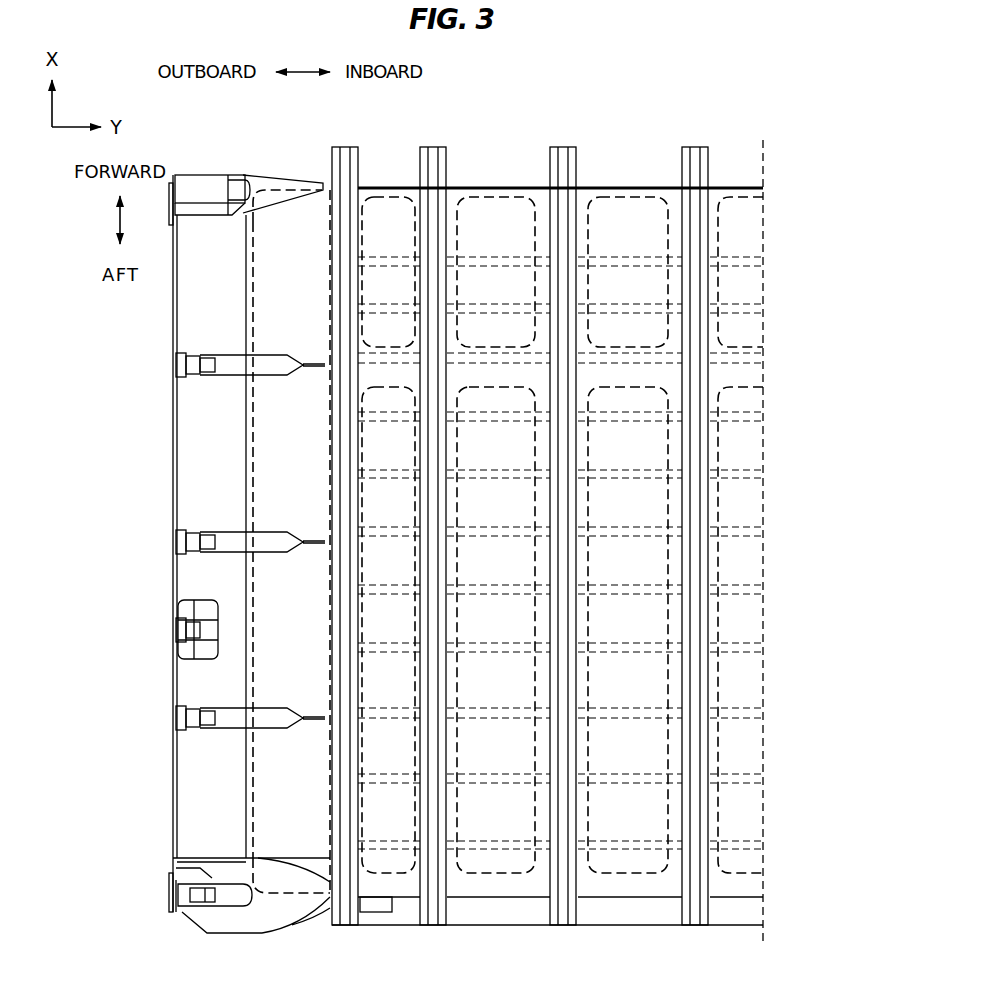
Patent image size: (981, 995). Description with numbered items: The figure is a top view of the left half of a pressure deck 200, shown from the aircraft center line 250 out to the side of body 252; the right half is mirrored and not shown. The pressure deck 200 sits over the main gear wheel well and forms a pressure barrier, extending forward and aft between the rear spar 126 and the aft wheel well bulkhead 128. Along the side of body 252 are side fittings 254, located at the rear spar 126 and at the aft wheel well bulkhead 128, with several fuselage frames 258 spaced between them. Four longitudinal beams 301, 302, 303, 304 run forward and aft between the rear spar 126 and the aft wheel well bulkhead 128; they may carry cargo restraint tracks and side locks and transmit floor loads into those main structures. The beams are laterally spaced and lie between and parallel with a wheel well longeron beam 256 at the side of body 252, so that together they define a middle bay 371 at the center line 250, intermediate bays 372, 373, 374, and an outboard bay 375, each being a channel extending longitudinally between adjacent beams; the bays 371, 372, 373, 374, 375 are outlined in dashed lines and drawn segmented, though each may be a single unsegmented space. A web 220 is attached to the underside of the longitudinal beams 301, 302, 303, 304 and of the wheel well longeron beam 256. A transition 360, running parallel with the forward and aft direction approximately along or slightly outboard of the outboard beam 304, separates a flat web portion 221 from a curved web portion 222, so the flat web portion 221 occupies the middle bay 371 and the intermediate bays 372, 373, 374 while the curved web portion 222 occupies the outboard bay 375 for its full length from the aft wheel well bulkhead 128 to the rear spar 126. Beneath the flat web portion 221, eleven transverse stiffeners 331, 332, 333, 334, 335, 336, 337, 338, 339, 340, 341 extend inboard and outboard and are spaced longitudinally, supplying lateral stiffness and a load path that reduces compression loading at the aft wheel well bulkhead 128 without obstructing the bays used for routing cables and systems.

The pressure deck 200 is at (641, 98).
The rear spar 126 is at (714, 188).
The aft wheel well bulkhead 128 is at (752, 909).
The center line 250 is at (763, 160).
The side of body 252 is at (167, 442).
The side fittings 254 is at (272, 176).
The wheel well longeron beams 256 is at (204, 326).
The fuselage frames 258 is at (173, 367).
The web 220 is at (740, 452).
The flat web portion 221 is at (744, 750).
The curved web portion 222 is at (269, 837).
The longitudinal beam 301 is at (695, 163).
The longitudinal beam 302 is at (562, 163).
The longitudinal beam 303 is at (432, 163).
The outboard beam 304 is at (345, 163).
The transition 360 is at (329, 189).
The transverse stiffener 331 is at (765, 258).
The transverse stiffener 332 is at (765, 308).
The transverse stiffener 333 is at (750, 361).
The transverse stiffener 334 is at (750, 420).
The transverse stiffener 335 is at (750, 481).
The transverse stiffener 336 is at (750, 538).
The transverse stiffener 337 is at (750, 596).
The transverse stiffener 338 is at (750, 655).
The transverse stiffener 339 is at (750, 718).
The transverse stiffener 340 is at (750, 783).
The transverse stiffener 341 is at (750, 848).
The middle bay 371 is at (732, 880).
The intermediate bay 372 is at (615, 880).
The intermediate bay 373 is at (485, 880).
The intermediate bay 374 is at (380, 880).
The outboard bay 375 is at (282, 870).